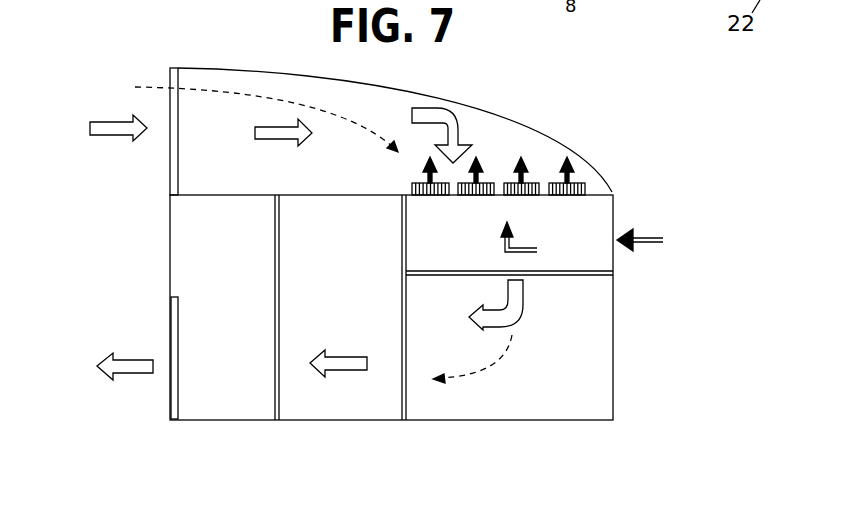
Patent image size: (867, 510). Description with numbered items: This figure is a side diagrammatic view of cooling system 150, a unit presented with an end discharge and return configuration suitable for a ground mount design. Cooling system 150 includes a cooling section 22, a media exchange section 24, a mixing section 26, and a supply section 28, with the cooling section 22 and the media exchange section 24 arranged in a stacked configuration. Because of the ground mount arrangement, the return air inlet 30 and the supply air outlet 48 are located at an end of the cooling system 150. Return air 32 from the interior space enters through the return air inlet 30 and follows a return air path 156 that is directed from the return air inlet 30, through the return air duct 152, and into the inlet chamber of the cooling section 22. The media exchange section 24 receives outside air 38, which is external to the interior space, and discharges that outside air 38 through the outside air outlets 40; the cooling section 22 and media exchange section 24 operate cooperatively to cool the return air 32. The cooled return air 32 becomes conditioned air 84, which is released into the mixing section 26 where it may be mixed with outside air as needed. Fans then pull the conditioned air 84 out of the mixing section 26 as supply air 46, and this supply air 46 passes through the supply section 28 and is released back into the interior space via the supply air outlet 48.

The cooling system 150 is at (734, 406).
The return air duct 152 is at (532, 121).
The return air path 156 is at (150, 87).
The cooling section 22 is at (600, 373).
The media exchange section 24 is at (599, 234).
The mixing section 26 is at (355, 244).
The supply section 28 is at (230, 244).
The return air inlet 30 is at (168, 143).
The return air 32 is at (118, 130).
The outside air 38 is at (583, 181).
The outside air outlets 40 is at (585, 190).
The supply air 46 is at (122, 362).
The supply air outlet 48 is at (168, 383).
The conditioned air 84 is at (333, 360).